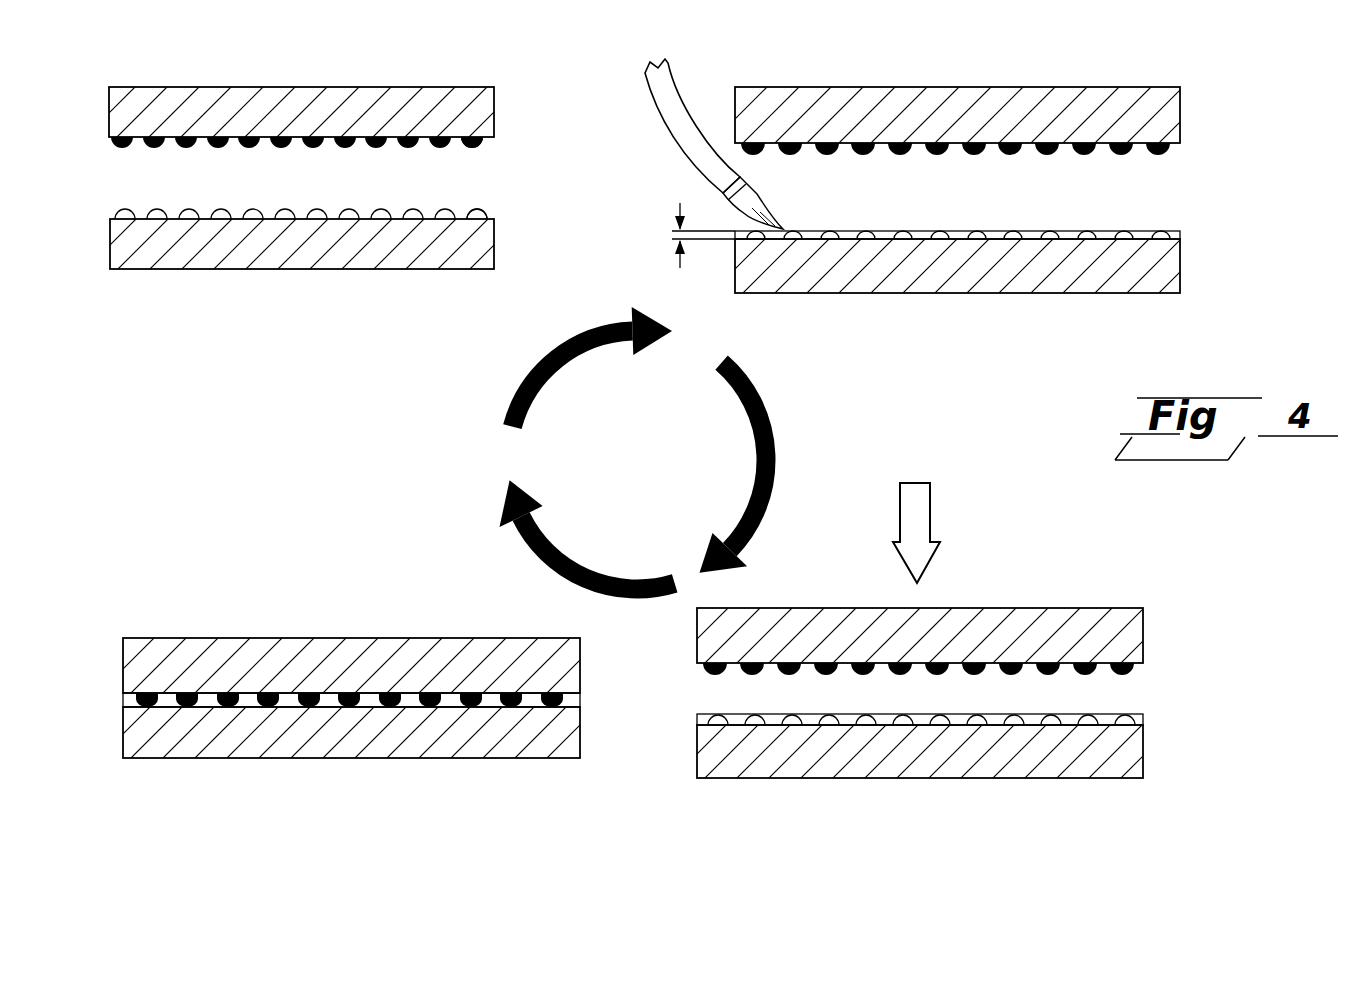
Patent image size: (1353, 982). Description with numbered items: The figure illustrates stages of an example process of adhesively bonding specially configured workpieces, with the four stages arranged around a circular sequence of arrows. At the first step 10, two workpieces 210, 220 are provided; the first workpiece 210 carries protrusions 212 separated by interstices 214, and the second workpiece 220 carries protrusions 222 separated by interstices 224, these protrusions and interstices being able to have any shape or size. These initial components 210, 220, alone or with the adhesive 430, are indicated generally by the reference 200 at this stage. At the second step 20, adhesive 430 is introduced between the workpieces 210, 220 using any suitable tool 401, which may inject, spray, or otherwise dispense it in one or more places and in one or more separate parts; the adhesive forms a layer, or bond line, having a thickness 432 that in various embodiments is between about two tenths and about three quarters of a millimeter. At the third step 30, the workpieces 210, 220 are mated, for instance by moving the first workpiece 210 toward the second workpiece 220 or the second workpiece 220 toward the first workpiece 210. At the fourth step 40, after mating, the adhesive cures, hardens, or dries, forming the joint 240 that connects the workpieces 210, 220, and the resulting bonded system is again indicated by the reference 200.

The first step 10 is at (512, 351).
The second step 20 is at (755, 352).
The third step 30 is at (803, 566).
The fourth step 40 is at (484, 566).
The initial components / resulting system 200 is at (202, 290).
The first workpiece 210 is at (345, 283).
The protrusions 212 is at (478, 213).
The interstices 214 is at (400, 208).
The second workpiece 220 is at (508, 88).
The protrusions 222 is at (481, 151).
The interstices 224 is at (233, 148).
The joint 240 is at (588, 690).
The tool 401 is at (650, 128).
The adhesive 430 is at (1088, 209).
The thickness 432 is at (680, 245).